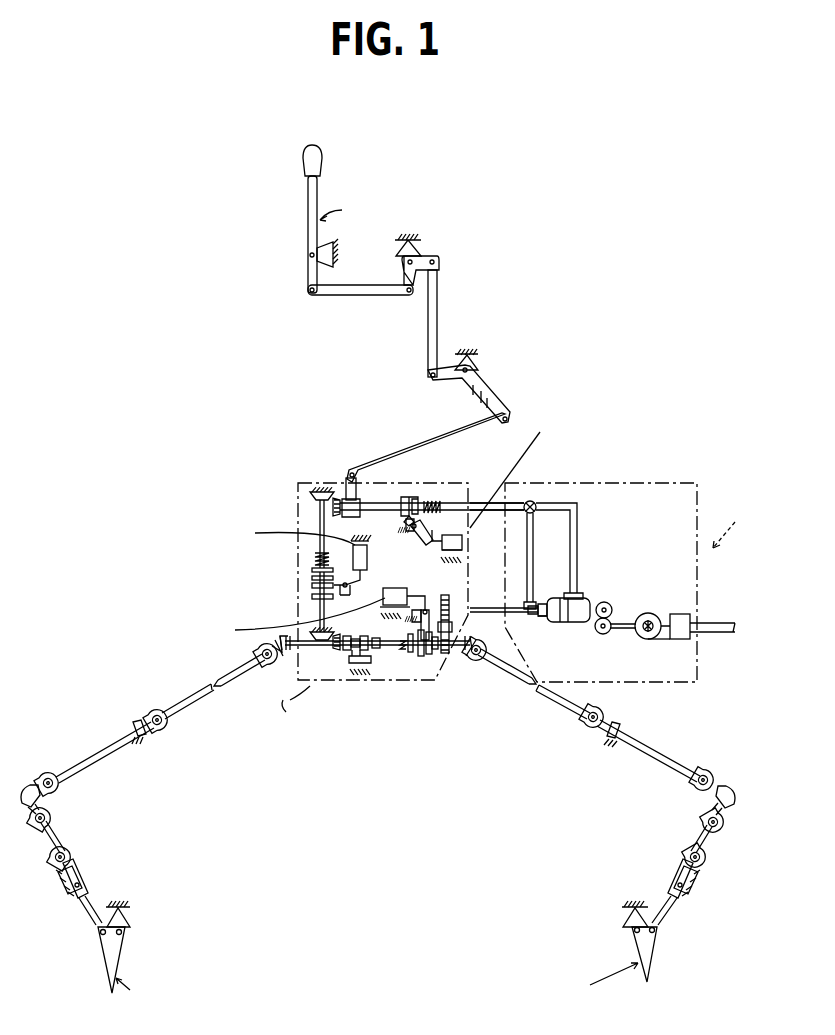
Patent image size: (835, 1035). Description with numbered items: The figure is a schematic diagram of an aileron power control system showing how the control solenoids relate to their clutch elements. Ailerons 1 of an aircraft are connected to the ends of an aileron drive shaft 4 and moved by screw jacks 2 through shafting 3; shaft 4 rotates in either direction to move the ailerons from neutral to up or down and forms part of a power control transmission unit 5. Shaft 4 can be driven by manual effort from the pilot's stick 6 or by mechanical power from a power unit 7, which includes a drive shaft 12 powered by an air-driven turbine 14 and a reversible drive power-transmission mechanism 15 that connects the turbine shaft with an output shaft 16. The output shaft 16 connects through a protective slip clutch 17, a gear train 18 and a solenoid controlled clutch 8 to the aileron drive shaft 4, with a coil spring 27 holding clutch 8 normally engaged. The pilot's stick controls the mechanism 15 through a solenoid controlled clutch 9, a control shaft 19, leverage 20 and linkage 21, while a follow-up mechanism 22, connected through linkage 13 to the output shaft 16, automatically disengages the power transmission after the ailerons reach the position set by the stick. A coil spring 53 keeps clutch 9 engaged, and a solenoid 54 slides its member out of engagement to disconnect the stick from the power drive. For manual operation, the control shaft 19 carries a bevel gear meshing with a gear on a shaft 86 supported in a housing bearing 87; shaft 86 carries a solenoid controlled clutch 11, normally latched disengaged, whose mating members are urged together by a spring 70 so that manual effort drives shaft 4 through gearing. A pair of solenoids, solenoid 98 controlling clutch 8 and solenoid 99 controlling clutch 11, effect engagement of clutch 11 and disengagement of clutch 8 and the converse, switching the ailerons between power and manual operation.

The ailerons 1 is at (135, 957).
The screw jacks 2 is at (95, 878).
The shafting 3 is at (119, 756).
The aileron drive shaft 4 is at (311, 646).
The power control transmission unit 5 is at (296, 494).
The pilot's stick 6 is at (318, 188).
The power unit 7 is at (614, 475).
The solenoid controlled clutch 8 is at (414, 658).
The solenoid controlled clutch 9 is at (420, 491).
The solenoid controlled clutch 11 is at (303, 591).
The drive shaft 12 is at (625, 620).
The linkage 13 is at (489, 495).
The air-driven turbine 14 is at (660, 615).
The reversible drive power-transmission mechanism 15 is at (592, 588).
The output shaft 16 is at (487, 604).
The protective slip clutch 17 is at (545, 622).
The gear train 18 is at (441, 589).
The control shaft 19 is at (381, 511).
The leverage 20 is at (340, 463).
The linkage 21 is at (418, 379).
The follow-up mechanism 22 is at (540, 497).
The coil spring 27 is at (405, 632).
The coil spring 53 is at (436, 500).
The solenoid 54 is at (430, 549).
The spring 70 is at (312, 560).
The shaft 86 is at (325, 522).
The housing bearing 87 is at (326, 606).
The solenoid 98 is at (246, 605).
The solenoid 99 is at (367, 558).